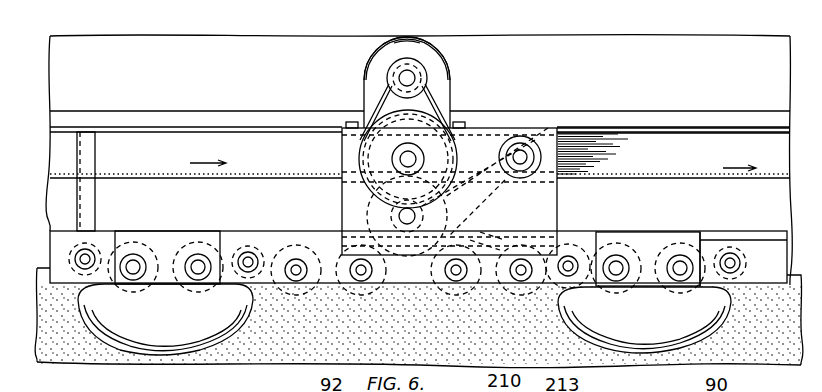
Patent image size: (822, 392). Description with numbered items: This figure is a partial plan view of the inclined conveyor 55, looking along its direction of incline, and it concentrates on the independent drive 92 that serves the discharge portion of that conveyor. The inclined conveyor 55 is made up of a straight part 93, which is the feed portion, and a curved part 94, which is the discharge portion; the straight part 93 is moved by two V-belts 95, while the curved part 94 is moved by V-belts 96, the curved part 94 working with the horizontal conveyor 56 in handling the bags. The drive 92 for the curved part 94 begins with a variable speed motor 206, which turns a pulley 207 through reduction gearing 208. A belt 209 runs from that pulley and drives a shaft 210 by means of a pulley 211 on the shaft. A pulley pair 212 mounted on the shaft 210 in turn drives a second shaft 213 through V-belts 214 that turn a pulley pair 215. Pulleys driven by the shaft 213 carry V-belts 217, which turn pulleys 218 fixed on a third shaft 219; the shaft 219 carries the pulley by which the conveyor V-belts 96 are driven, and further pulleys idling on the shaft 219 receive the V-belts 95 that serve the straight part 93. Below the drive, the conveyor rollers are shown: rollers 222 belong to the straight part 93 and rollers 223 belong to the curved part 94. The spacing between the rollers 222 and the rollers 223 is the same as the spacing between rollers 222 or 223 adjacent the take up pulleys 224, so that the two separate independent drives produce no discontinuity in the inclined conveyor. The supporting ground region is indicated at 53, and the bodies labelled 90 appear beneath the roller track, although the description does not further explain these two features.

The ground/floor 53 is at (65, 347).
The inclined conveyor 55 is at (718, 235).
The horizontal conveyor 56 is at (773, 352).
The ballast/ground body 90 is at (248, 316).
The drive 92 is at (376, 62).
The straight part 93 is at (103, 231).
The curved part 94 is at (739, 240).
The V-belts 95 is at (60, 253).
The V-belts 96 is at (675, 175).
The variable speed motor 206 is at (373, 50).
The pulley 207 is at (401, 62).
The reduction gearing 208 is at (425, 46).
The belt 209 is at (442, 110).
The shaft 210 is at (400, 158).
The pulley 211 is at (360, 160).
The pulley pair 212 is at (345, 183).
The shaft 213 is at (549, 125).
The V-belts 214 is at (480, 128).
The pulley pair 215 is at (576, 128).
The V-belts 217 is at (495, 215).
The pulleys 218 is at (364, 204).
The shaft 219 is at (425, 213).
The rollers 222 is at (160, 253).
The rollers 223 is at (490, 263).
The take up pulleys 224 is at (258, 228).